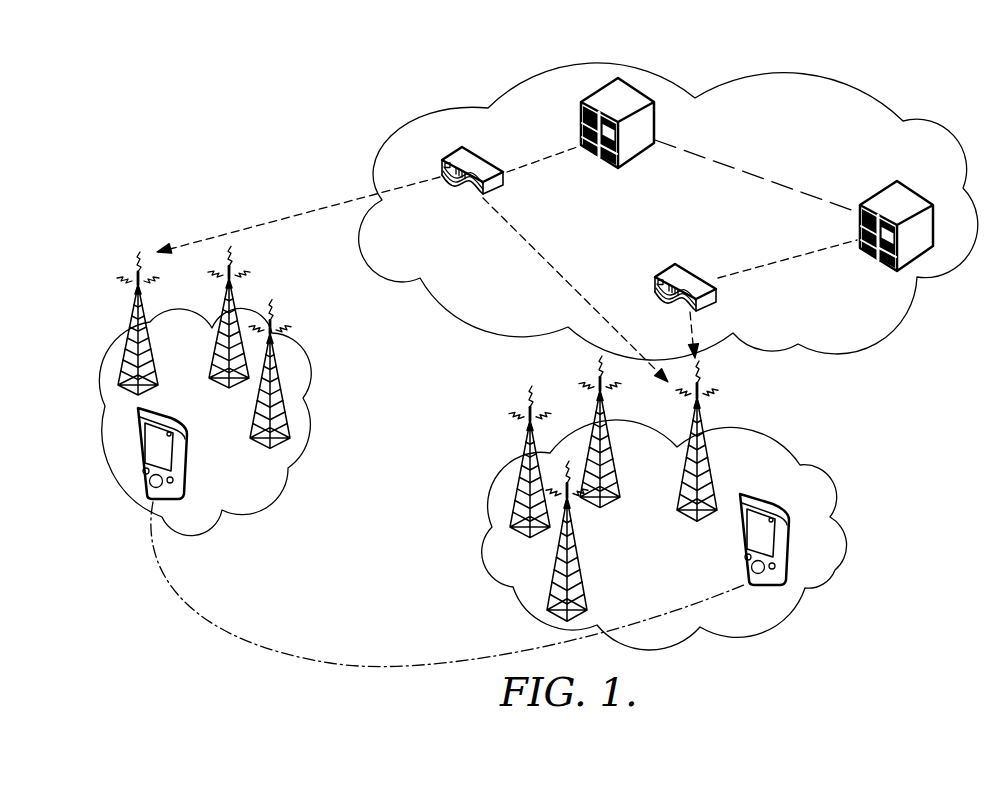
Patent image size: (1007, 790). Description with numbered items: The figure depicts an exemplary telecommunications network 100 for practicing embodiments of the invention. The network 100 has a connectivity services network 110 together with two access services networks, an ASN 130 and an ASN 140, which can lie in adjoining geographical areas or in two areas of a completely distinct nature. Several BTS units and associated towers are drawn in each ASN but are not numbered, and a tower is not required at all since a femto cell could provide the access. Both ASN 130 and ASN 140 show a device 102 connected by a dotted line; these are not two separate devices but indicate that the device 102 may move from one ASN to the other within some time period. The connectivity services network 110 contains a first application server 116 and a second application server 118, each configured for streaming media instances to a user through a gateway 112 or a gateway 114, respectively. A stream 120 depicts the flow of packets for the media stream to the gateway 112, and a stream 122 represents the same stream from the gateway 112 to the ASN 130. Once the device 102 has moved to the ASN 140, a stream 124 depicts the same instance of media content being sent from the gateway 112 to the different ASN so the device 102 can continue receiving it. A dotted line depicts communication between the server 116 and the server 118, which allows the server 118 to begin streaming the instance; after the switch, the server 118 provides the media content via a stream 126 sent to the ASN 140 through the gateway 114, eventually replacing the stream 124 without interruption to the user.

The telecommunications network 100 is at (231, 83).
The device 102 is at (170, 415).
The connectivity services network 110 is at (436, 112).
The gateway 112 is at (452, 152).
The gateway 114 is at (666, 264).
The first application server 116 is at (594, 92).
The second application server 118 is at (880, 192).
The stream 120 is at (546, 162).
The stream 122 is at (350, 207).
The stream 124 is at (556, 270).
The stream 126 is at (835, 243).
The access services network 130 is at (203, 533).
The access services network 140 is at (838, 572).